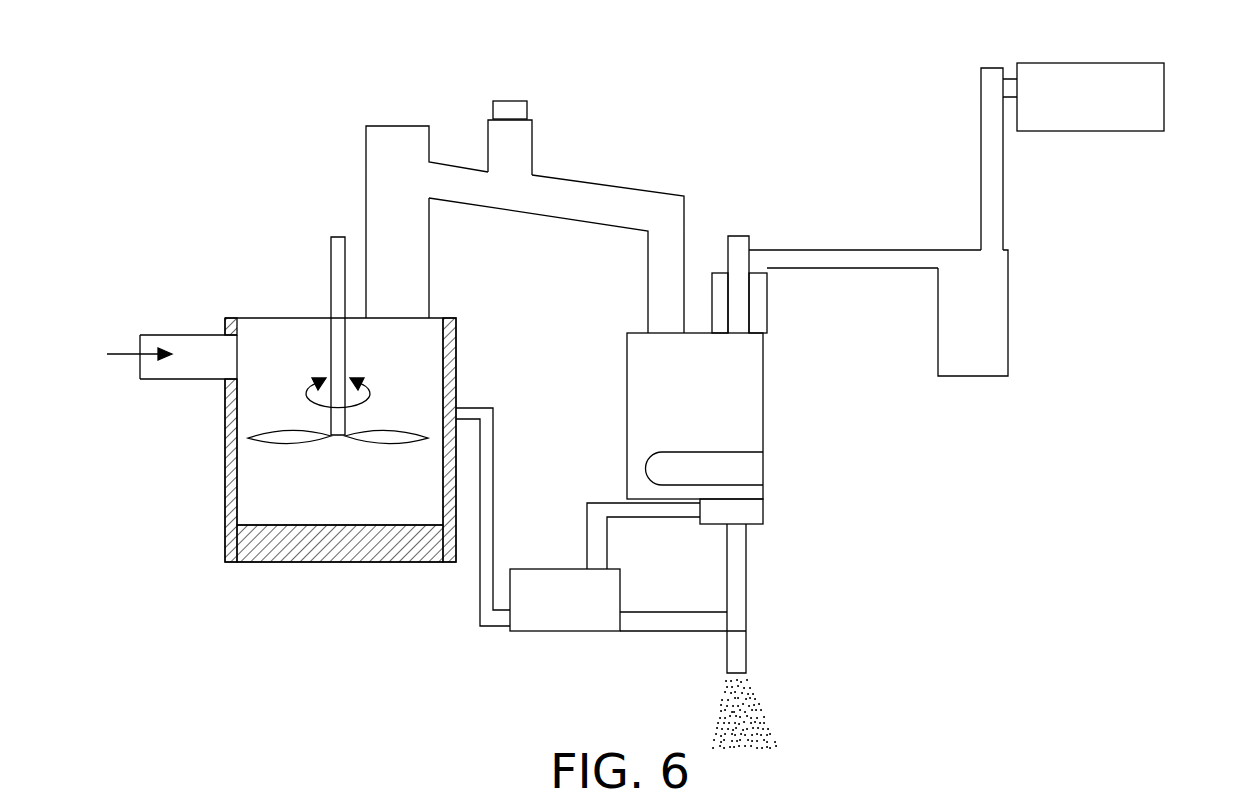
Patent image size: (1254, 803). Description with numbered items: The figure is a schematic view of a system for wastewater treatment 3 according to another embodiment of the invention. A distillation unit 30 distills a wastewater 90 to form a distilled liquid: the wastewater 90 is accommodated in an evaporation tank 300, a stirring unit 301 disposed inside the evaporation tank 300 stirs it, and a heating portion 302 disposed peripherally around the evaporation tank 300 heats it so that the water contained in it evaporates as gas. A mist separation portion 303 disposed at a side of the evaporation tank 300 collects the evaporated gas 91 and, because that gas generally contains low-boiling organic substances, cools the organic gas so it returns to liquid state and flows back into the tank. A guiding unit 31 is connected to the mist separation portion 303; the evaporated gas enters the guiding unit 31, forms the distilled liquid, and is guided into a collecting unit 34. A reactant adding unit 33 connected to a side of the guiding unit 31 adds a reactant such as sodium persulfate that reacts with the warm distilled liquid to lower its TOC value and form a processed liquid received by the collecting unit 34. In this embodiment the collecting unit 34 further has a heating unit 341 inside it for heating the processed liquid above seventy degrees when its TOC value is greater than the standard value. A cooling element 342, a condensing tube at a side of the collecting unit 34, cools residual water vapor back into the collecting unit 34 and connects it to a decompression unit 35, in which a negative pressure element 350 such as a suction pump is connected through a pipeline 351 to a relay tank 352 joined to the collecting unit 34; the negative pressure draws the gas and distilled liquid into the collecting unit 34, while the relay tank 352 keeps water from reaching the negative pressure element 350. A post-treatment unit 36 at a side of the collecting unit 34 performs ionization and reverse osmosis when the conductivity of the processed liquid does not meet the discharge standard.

The system for wastewater treatment 3 is at (146, 135).
The distillation unit 30 is at (238, 302).
The evaporation tank 300 is at (294, 318).
The stirring unit 301 is at (337, 236).
The heating portion 302 is at (322, 552).
The mist separation portion 303 is at (430, 294).
The guiding unit 31 is at (580, 182).
The reactant adding unit 33 is at (491, 109).
The evaporated gas 91 is at (513, 88).
The collecting unit 34 is at (763, 415).
The heating unit 341 is at (721, 452).
The cooling element 342 is at (763, 309).
The decompression unit 35 is at (1163, 50).
The negative pressure element 350 is at (1158, 102).
The pipeline 351 is at (996, 188).
The relay tank 352 is at (1005, 321).
The post-treatment unit 36 is at (557, 569).
The wastewater 90 is at (125, 348).